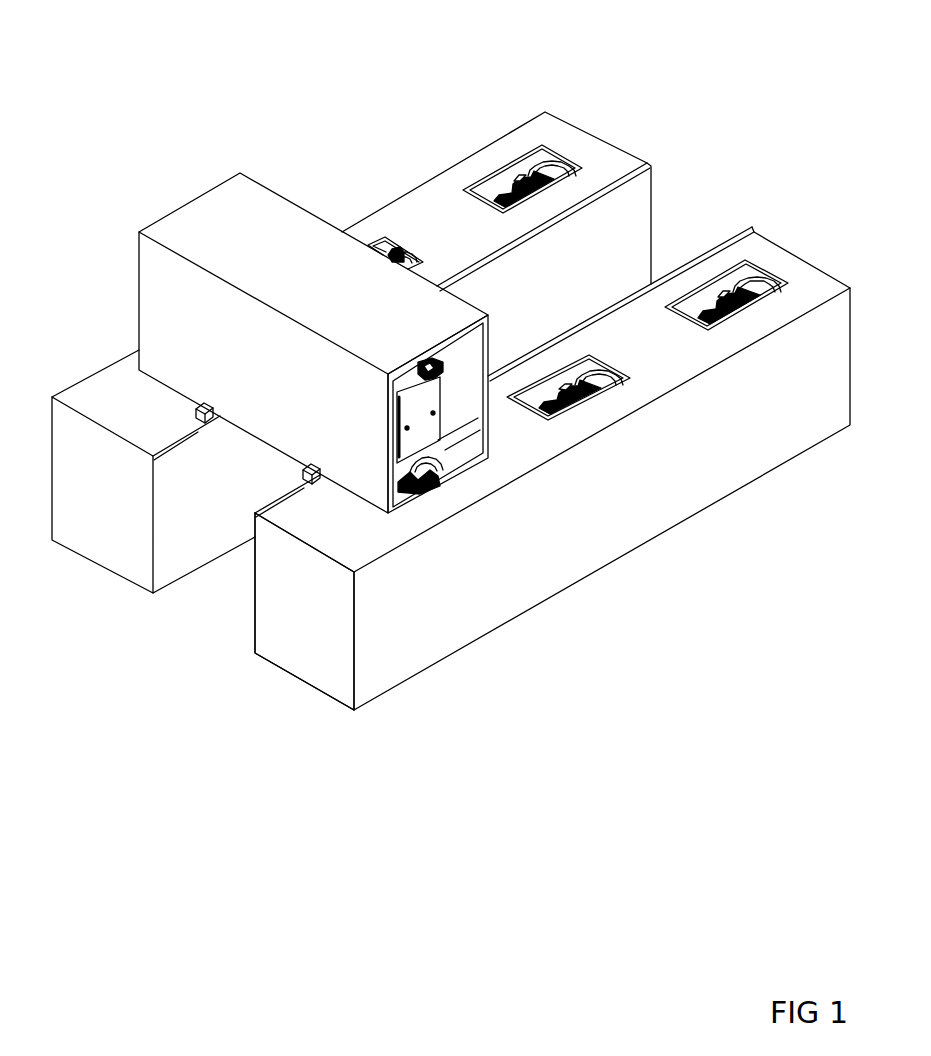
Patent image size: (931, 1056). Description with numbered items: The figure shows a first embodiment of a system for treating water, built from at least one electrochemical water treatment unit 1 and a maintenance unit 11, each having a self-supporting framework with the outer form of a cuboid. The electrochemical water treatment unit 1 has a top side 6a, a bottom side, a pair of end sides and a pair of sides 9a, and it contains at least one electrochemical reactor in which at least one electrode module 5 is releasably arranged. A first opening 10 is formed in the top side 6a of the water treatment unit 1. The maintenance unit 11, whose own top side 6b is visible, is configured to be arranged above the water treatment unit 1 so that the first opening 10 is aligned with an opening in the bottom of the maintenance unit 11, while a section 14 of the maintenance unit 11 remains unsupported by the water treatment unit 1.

The electrochemical water treatment unit 1 is at (638, 135).
The electrode module 5 is at (420, 427).
The top side 6a is at (582, 143).
The top side 6b is at (223, 237).
The pair of sides 9a is at (185, 553).
The first opening 10 is at (578, 217).
The maintenance unit 11 is at (302, 182).
The section 14 is at (252, 458).